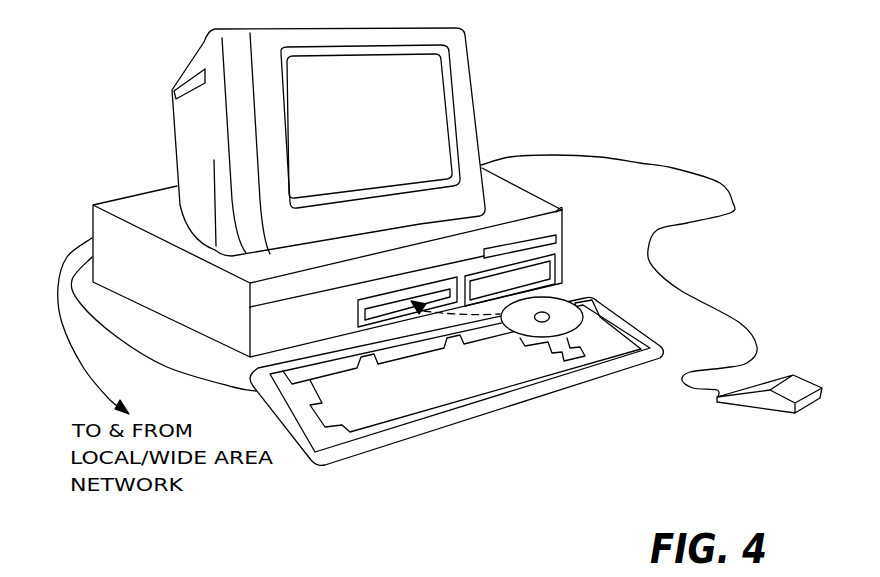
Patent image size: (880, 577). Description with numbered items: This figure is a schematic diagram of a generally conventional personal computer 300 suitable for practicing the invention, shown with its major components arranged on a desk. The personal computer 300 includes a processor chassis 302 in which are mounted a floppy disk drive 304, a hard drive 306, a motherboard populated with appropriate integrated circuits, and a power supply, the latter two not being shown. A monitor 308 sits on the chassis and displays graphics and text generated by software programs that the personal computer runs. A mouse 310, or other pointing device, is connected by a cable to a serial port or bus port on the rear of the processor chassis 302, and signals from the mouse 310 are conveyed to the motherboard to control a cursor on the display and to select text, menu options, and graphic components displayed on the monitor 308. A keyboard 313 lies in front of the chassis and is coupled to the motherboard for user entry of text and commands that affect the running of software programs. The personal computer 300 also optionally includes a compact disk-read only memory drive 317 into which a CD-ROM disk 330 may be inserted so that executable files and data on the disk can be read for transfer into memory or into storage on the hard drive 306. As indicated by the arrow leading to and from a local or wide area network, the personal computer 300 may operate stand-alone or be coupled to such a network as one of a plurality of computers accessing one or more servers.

The personal computer 300 is at (470, 431).
The processor chassis 302 is at (546, 243).
The floppy disk drive 304 is at (561, 211).
The hard drive 306 is at (540, 272).
The monitor 308 is at (473, 90).
The mouse 310 is at (800, 413).
The keyboard 313 is at (555, 395).
The CD-ROM drive 317 is at (357, 317).
The CD-ROM disk 330 is at (582, 318).